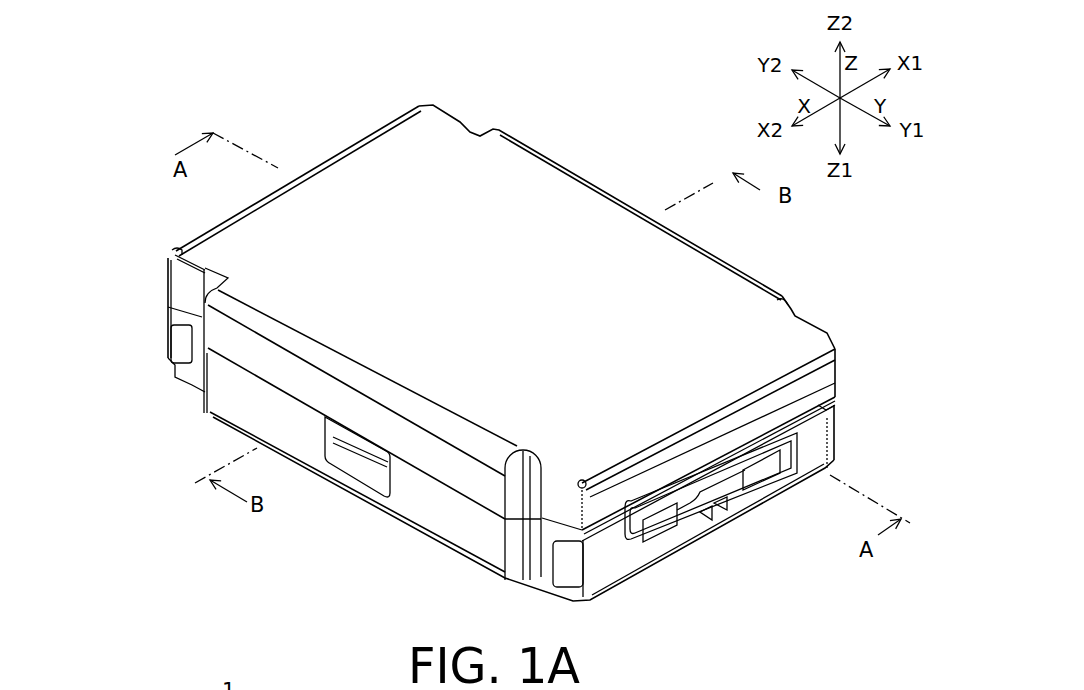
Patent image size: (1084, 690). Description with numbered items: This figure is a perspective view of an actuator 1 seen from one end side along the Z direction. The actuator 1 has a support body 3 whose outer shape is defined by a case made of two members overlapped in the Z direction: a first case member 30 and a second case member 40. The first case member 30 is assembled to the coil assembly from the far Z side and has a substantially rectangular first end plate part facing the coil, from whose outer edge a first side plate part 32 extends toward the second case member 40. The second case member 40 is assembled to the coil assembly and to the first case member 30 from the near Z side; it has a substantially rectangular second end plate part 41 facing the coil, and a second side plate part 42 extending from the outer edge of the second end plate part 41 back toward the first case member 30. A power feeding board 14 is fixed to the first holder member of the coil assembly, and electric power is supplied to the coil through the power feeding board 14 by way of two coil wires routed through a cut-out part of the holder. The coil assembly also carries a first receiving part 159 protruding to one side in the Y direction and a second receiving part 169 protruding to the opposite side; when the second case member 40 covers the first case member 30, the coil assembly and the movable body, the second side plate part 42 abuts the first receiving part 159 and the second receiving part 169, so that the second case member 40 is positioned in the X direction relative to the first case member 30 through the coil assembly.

The actuator 1 is at (307, 80).
The support body 3 is at (545, 150).
The power feeding board 14 is at (722, 504).
The first case member 30 is at (451, 525).
The first side plate part 32 is at (820, 430).
The second case member 40 is at (745, 302).
The second end plate part 41 is at (585, 205).
The second side plate part 42 is at (820, 373).
The first receiving part 159 is at (828, 404).
The second receiving part 169 is at (163, 317).